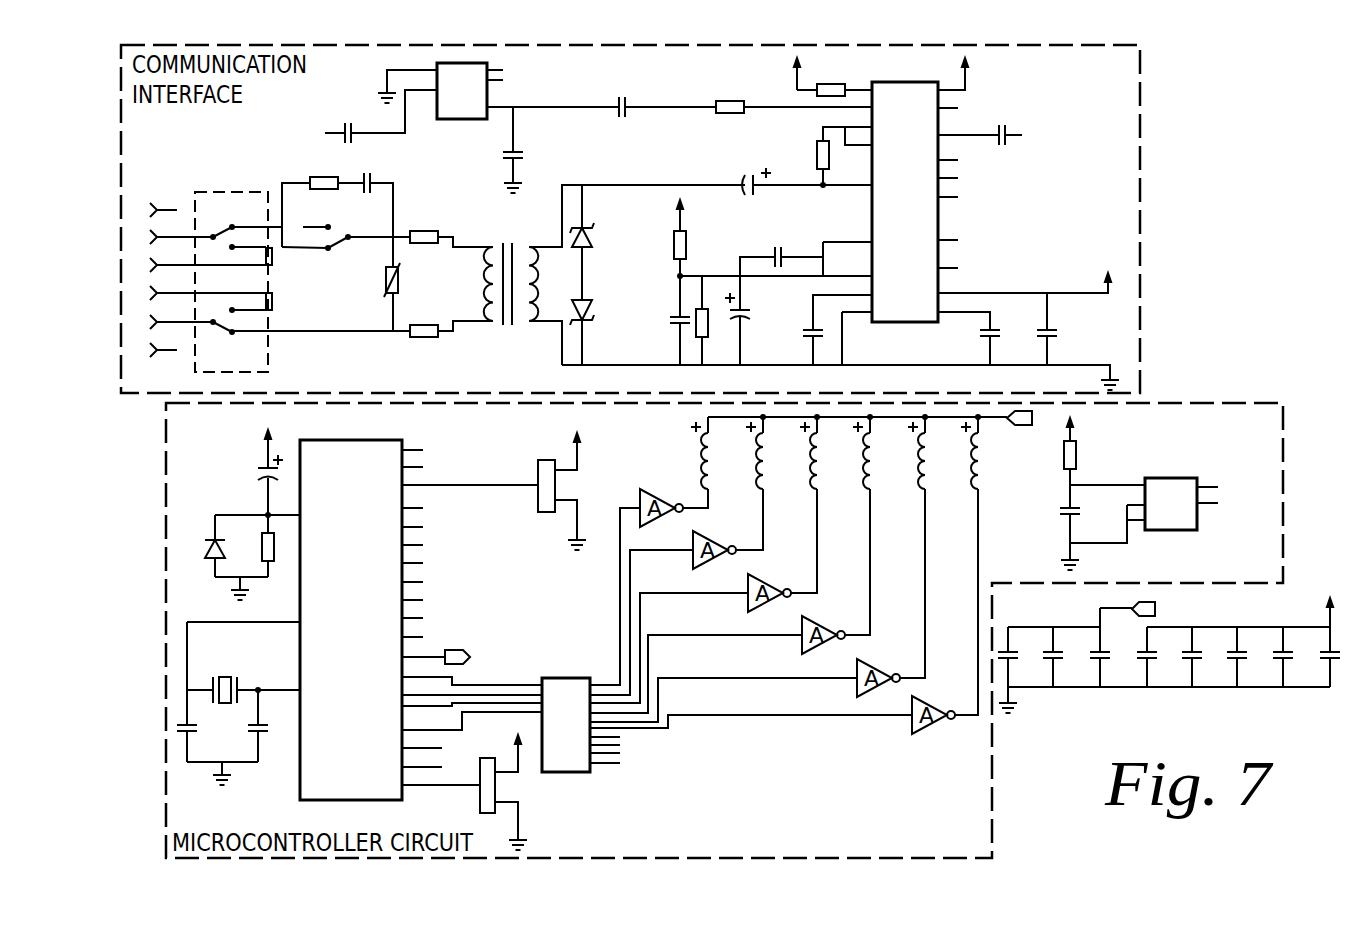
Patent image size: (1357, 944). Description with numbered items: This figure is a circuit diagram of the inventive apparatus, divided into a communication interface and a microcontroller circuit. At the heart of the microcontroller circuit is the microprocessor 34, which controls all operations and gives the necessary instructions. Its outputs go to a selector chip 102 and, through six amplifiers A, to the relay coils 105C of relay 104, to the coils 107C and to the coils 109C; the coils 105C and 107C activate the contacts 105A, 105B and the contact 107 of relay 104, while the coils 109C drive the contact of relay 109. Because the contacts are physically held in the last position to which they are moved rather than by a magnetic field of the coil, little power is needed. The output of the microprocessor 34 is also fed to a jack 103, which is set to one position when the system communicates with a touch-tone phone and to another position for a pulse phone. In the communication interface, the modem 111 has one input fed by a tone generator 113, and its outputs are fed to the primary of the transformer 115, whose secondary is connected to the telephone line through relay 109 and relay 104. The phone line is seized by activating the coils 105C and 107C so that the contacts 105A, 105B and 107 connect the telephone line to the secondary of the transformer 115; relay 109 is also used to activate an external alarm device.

The microprocessor 34 is at (347, 478).
The driver integrated circuit 102 is at (568, 700).
The jack 103 is at (541, 471).
The relay 104 is at (222, 197).
The line switch contact 105A is at (226, 244).
The line switch contact 105B is at (222, 332).
The relay coils 105C is at (711, 462).
The contact 107 is at (343, 250).
The coils 107C is at (819, 462).
The relay 109 is at (1176, 493).
The coils 109C is at (927, 462).
The modem 111 is at (917, 210).
The tone generator 113 is at (480, 97).
The transformer 115 is at (505, 245).